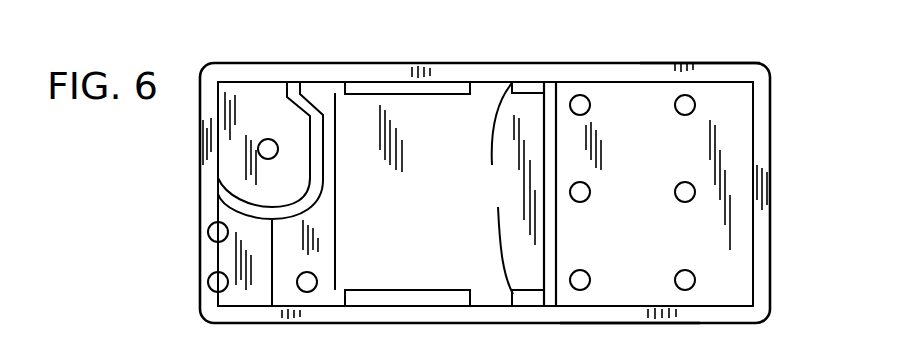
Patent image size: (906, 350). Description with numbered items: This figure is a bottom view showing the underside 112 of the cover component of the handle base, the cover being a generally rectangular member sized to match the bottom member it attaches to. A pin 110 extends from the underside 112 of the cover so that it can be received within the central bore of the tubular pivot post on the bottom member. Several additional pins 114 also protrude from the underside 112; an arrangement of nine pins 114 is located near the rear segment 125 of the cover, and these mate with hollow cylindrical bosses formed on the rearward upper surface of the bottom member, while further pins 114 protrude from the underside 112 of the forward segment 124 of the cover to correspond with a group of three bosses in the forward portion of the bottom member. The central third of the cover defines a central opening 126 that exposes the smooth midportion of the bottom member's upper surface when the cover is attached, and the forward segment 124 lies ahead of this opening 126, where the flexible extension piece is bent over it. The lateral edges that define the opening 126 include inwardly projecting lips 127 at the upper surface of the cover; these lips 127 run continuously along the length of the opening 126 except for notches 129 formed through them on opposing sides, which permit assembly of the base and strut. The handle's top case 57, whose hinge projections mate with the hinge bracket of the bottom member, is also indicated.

The forward segment 124 is at (248, 63).
The rear segment 125 is at (708, 62).
The central opening 126 is at (370, 140).
The inwardly projecting lips 127 is at (417, 95).
The notches 129 is at (515, 194).
The pin 110 is at (258, 149).
The underside 112 is at (666, 165).
The pins 114 is at (208, 280).
The top case 57 is at (578, 325).